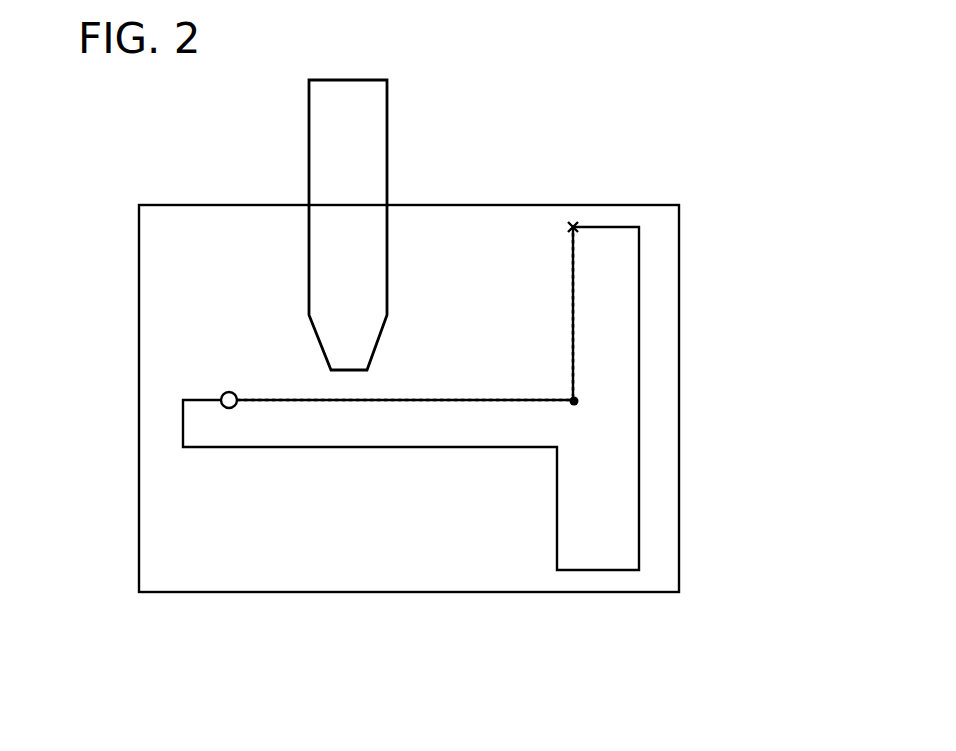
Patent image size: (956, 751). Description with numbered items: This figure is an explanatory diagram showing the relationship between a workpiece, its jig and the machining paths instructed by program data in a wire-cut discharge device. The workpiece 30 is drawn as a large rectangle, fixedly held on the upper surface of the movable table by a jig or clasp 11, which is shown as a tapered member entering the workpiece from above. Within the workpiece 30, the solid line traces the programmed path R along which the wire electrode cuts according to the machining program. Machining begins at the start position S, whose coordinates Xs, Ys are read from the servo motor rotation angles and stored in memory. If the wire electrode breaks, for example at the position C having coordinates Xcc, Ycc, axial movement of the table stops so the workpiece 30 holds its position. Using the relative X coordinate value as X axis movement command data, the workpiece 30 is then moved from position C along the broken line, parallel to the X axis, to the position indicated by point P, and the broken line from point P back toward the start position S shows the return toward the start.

The jig or clasp 11 is at (387, 143).
The workpiece 30 is at (680, 513).
The programmed path R is at (473, 448).
The start position S is at (234, 391).
The point P is at (578, 403).
The stop position C is at (573, 221).